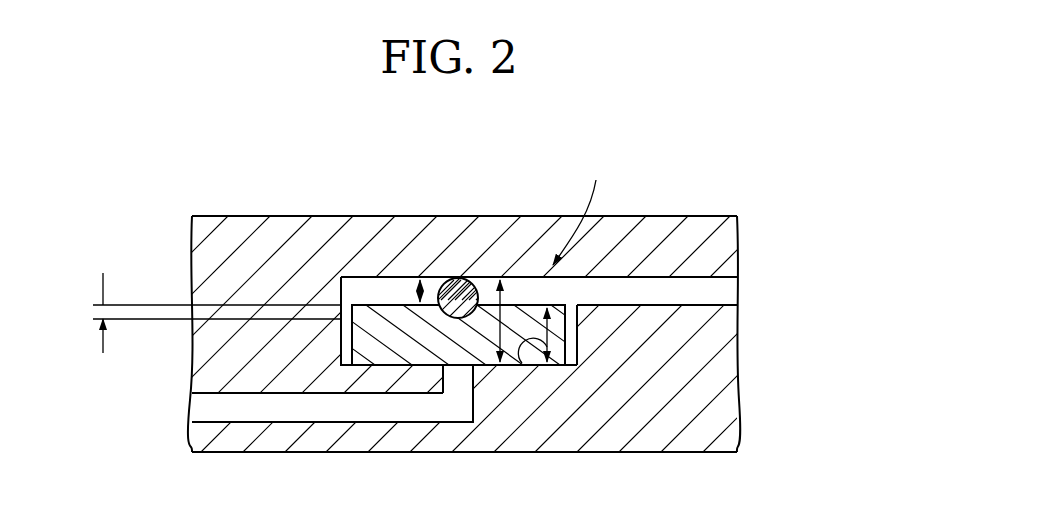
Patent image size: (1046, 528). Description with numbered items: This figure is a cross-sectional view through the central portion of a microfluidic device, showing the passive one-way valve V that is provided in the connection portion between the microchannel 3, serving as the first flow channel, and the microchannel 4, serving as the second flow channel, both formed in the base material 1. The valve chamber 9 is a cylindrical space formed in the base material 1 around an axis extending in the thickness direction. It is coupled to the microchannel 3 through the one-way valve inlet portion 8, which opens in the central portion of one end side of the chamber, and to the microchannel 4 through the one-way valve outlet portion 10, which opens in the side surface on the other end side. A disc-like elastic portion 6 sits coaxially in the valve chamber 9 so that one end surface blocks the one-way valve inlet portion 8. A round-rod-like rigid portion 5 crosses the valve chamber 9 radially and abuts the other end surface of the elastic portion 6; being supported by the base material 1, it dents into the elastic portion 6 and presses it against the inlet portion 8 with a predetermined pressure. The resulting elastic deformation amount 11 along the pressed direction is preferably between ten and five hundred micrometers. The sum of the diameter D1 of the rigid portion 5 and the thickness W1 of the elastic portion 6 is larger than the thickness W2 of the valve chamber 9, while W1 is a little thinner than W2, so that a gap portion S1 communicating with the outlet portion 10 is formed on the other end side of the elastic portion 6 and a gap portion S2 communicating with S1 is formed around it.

The base material 1 is at (722, 246).
The microchannel (first flow channel) 3 is at (205, 405).
The microchannel (second flow channel) 4 is at (718, 290).
The rigid portion 5 is at (455, 297).
The elastic portion 6 is at (385, 345).
The one-way valve inlet portion 8 is at (420, 365).
The valve chamber 9 is at (343, 277).
The one-way valve outlet portion 10 is at (583, 290).
The elastic deformation amount along pressed direction of elastic portion 11 is at (202, 313).
The gap portion S1 is at (369, 293).
The gap portion S2 is at (570, 343).
The diameter of rigid portion D1 is at (418, 298).
The thickness of elastic portion W1 is at (522, 363).
The thickness of valve chamber W2 is at (505, 319).
The passive one-way valve V is at (579, 208).